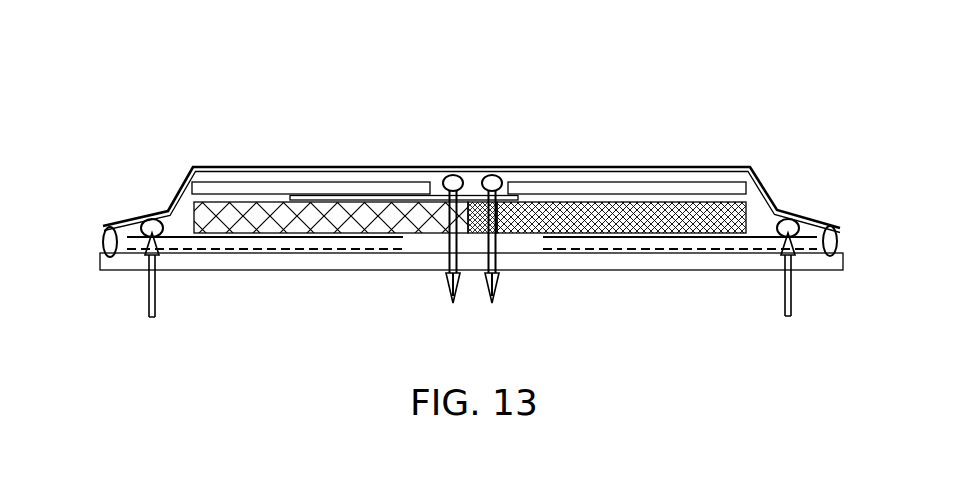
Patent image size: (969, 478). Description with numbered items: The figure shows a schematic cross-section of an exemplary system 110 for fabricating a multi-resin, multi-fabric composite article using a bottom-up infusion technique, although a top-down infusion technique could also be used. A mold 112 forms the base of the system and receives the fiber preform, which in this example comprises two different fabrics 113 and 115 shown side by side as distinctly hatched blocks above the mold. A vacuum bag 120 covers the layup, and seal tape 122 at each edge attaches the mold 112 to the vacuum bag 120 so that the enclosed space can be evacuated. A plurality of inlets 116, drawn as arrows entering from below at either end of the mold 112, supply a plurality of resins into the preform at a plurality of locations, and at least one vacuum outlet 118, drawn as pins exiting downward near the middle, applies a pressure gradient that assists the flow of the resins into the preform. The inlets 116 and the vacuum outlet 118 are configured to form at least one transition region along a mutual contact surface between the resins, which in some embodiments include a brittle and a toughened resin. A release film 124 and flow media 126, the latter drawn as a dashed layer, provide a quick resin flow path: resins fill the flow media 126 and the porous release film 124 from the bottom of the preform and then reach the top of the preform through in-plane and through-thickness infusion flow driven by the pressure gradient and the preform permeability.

The system 110 is at (742, 79).
The mold 112 is at (102, 260).
The fabric 113 is at (378, 208).
The fabric 115 is at (663, 203).
The inlets 116 is at (150, 320).
The vacuum outlet 118 is at (468, 262).
The vacuum bag 120 is at (295, 167).
The seal tape 122 is at (105, 232).
The release film 124 is at (557, 190).
The flow media 126 is at (302, 250).